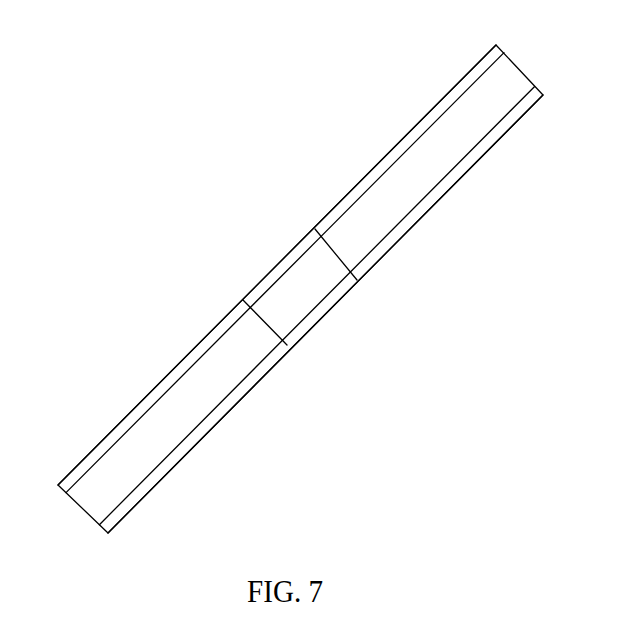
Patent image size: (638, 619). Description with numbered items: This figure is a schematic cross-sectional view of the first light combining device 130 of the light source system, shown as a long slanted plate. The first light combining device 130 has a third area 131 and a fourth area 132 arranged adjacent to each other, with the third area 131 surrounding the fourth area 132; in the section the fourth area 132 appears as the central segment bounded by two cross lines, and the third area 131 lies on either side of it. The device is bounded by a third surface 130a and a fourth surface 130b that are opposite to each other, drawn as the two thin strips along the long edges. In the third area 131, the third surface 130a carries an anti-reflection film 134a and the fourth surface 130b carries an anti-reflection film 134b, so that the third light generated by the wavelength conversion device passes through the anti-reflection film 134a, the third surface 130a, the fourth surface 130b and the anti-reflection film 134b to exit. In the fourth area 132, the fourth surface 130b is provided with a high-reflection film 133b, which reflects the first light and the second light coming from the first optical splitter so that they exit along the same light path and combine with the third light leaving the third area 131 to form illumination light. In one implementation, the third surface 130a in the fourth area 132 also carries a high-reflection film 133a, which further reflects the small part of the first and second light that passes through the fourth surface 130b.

The first light combining device 130 is at (312, 274).
The third surface 130a is at (264, 273).
The fourth surface 130b is at (349, 306).
The third area 131 is at (412, 200).
The fourth area 132 is at (316, 256).
The high-reflection film 133a is at (276, 273).
The high-reflection film 133b is at (325, 310).
The anti-reflection film 134a is at (138, 414).
The anti-reflection film 134b is at (198, 433).